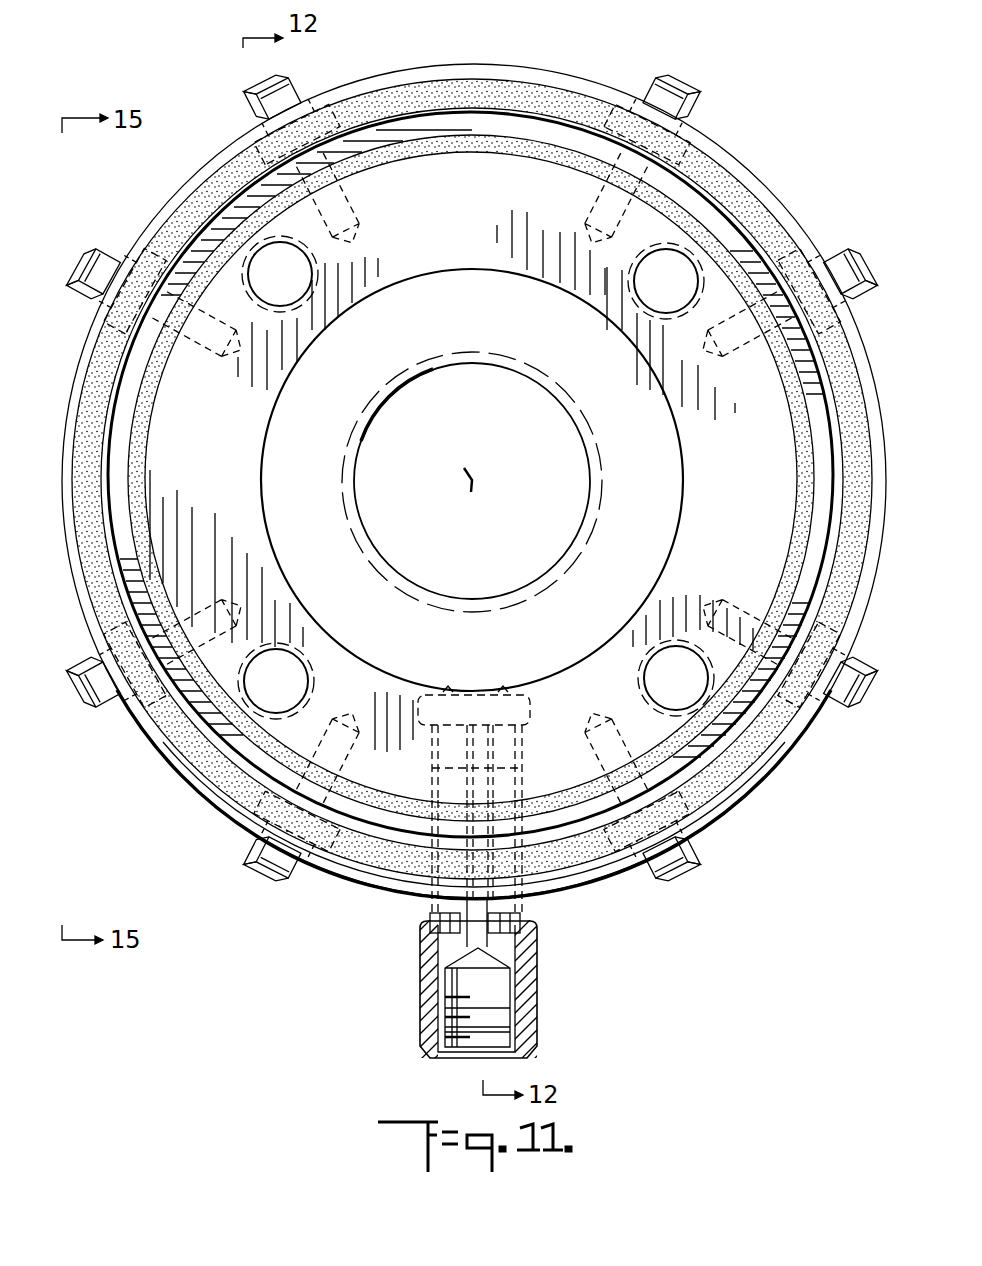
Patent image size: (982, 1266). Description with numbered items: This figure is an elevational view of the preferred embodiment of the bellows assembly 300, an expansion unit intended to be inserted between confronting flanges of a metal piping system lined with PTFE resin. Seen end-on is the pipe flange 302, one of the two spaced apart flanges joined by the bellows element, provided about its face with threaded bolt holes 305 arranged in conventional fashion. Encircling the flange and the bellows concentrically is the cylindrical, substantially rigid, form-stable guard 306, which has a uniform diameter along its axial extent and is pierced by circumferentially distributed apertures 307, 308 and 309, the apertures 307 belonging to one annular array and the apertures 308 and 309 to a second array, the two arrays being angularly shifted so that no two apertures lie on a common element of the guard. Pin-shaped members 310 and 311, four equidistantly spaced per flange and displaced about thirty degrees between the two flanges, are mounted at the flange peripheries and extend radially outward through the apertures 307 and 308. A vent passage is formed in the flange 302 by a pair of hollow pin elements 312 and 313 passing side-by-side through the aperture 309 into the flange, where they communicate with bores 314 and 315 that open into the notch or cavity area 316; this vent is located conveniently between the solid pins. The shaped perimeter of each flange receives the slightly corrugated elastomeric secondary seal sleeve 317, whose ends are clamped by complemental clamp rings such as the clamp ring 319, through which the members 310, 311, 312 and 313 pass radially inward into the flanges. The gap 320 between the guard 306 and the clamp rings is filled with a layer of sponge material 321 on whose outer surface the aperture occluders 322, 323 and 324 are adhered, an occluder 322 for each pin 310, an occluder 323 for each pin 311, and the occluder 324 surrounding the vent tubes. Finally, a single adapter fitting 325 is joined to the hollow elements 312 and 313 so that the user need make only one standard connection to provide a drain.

The bellows assembly 300 is at (828, 104).
The pipe flange 302 is at (772, 410).
The threaded bolt holes 305 is at (256, 268).
The guard 306 is at (432, 63).
The apertures 307 is at (698, 122).
The apertures 308 is at (303, 82).
The aperture 309 is at (560, 898).
The pin-shaped members 310 is at (688, 100).
The pin-shaped members 311 is at (262, 96).
The hollow pin element 312 is at (432, 908).
The hollow pin element 313 is at (524, 920).
The bore 314 is at (418, 752).
The bore 315 is at (522, 748).
The notch or cavity area 316 is at (522, 690).
The secondary seal sleeve 317 is at (491, 145).
The clamp ring 319 is at (413, 118).
The gap 320 is at (455, 78).
The sponge material 321 is at (442, 82).
The aperture occluder 322 is at (697, 132).
The aperture occluder 323 is at (233, 135).
The aperture occluder 324 is at (412, 808).
The adapter fitting 325 is at (440, 1007).